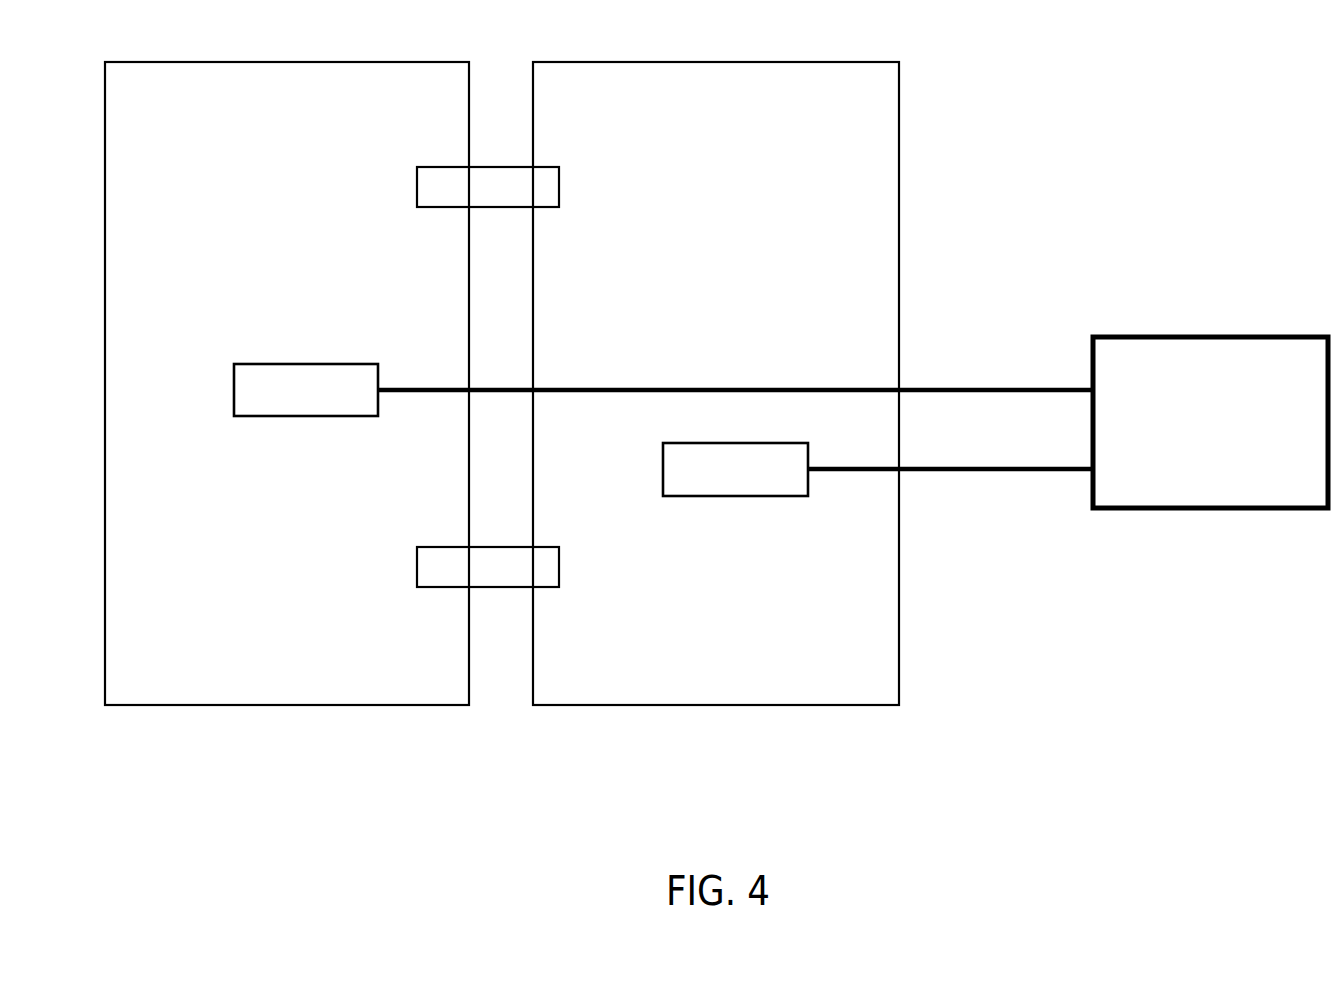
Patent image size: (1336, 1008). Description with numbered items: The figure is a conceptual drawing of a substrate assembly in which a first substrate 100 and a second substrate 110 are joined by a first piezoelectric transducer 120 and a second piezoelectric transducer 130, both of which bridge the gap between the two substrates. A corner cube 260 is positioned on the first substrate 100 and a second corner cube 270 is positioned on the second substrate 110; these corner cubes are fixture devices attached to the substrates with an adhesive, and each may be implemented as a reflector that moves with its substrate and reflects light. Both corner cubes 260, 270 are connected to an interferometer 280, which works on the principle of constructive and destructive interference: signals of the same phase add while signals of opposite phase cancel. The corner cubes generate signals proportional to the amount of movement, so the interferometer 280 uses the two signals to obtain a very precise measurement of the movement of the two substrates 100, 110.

The first substrate 100 is at (274, 713).
The second substrate 110 is at (757, 712).
The first piezoelectric transducer 120 is at (403, 201).
The second piezoelectric transducer 130 is at (575, 590).
The corner cube 260 is at (338, 426).
The corner cube 270 is at (778, 508).
The interferometer 280 is at (1221, 524).